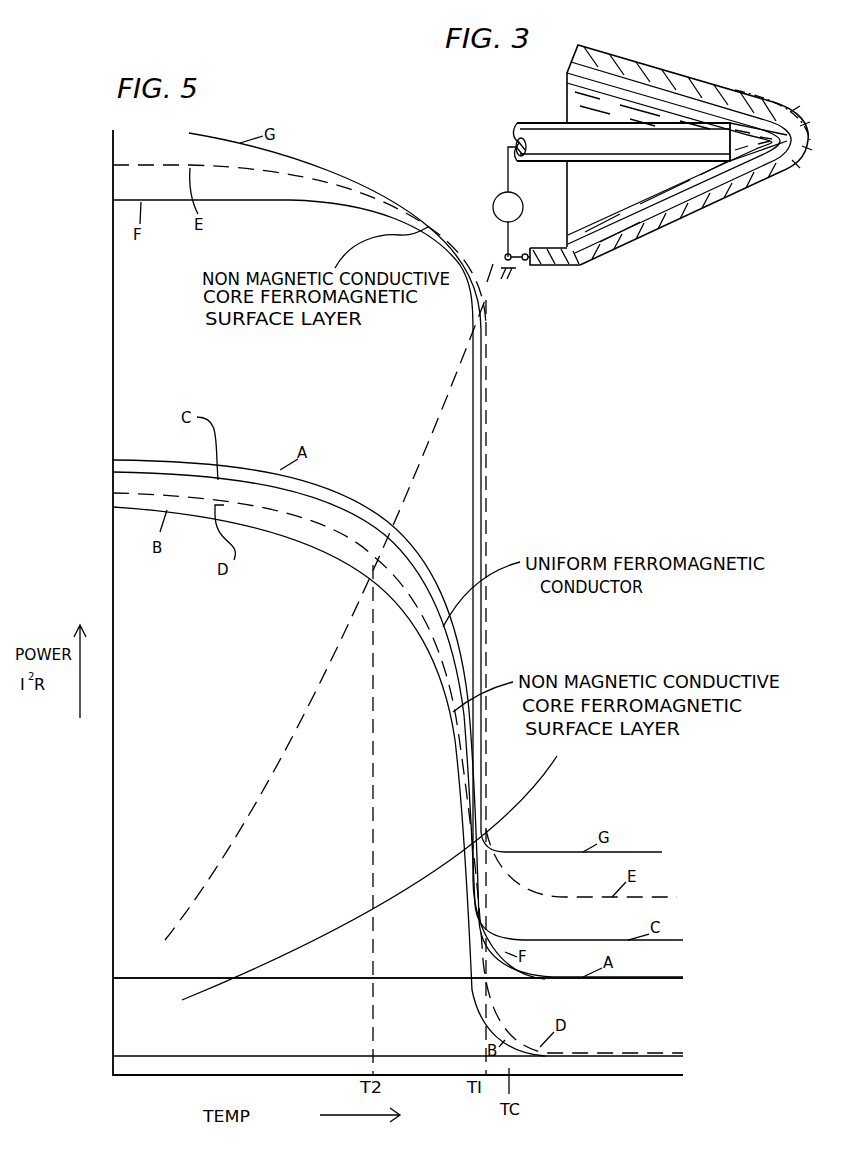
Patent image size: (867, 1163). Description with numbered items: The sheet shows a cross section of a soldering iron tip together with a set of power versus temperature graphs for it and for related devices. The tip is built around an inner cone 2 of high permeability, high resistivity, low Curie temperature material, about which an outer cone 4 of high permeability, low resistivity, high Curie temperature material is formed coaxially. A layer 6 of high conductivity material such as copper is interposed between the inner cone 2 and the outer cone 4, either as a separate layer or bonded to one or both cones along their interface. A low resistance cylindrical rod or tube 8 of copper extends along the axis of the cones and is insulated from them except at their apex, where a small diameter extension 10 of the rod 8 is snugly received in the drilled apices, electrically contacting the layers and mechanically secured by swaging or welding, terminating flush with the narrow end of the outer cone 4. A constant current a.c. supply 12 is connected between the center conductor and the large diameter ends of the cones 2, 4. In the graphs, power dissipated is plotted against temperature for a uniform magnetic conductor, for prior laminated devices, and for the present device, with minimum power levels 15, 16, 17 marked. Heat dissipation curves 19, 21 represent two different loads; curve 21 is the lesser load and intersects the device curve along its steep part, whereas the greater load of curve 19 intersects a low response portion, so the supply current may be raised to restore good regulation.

In FIG. 3, the inner cone 2 is at (566, 89).
In FIG. 3, the outer cone 4 is at (700, 105).
In FIG. 3, the layer of high conductivity material 6 is at (660, 85).
In FIG. 3, the cylindrical rod or tube 8 is at (565, 123).
In FIG. 3, the small diameter extension 10 is at (799, 128).
In FIG. 3, the constant current a.c. supply 12 is at (494, 200).
In FIG. 5, the minimum power level line 15 is at (350, 985).
In FIG. 5, the minimum power level line 16 is at (350, 1066).
In FIG. 5, the minimum power level line 17 is at (383, 985).
In FIG. 5, the heat dissipation curve 19 is at (331, 657).
In FIG. 5, the heat dissipation curve 21 is at (370, 912).